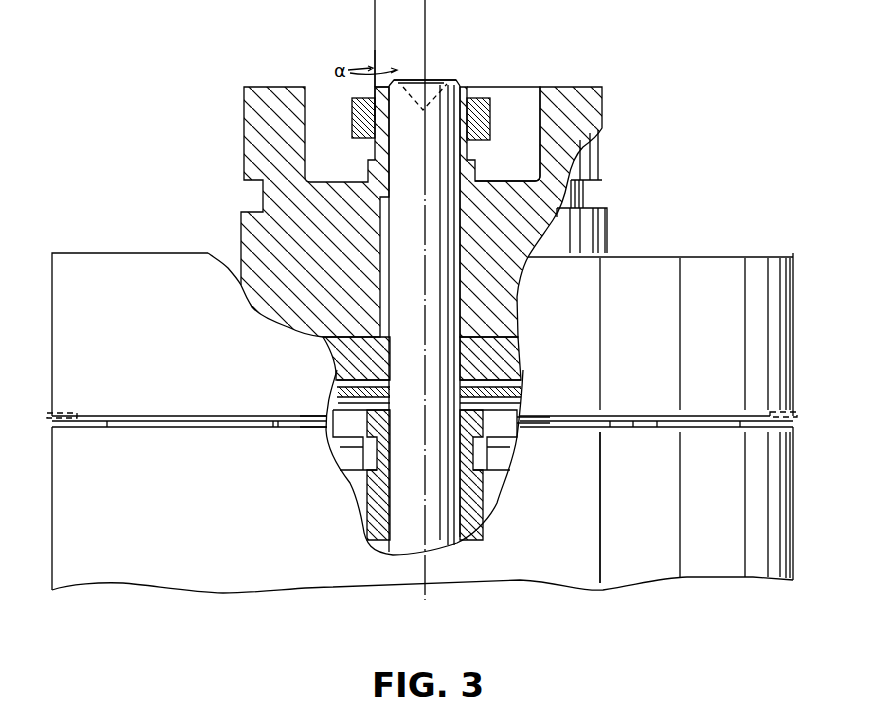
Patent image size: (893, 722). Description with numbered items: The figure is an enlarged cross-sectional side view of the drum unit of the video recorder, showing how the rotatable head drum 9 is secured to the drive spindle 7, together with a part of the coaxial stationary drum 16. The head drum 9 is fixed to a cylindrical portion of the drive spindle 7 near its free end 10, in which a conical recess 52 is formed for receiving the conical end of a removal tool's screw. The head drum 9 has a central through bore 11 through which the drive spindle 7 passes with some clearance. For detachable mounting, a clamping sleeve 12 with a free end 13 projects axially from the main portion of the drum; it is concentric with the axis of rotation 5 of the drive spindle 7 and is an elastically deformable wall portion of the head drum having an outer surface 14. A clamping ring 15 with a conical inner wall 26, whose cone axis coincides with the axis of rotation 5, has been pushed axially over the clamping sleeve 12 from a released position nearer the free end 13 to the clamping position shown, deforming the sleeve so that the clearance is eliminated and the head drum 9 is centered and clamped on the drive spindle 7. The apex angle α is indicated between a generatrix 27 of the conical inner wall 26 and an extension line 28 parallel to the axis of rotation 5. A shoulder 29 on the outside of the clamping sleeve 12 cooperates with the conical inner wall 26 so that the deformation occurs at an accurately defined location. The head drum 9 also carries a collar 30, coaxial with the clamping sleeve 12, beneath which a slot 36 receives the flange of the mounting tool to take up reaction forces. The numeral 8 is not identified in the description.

The axis of rotation 5 is at (428, 28).
The drive spindle 7 is at (433, 307).
The gasket 8 is at (67, 413).
The head drum 9 is at (753, 278).
The free end 10 is at (447, 80).
The central through bore 11 is at (462, 283).
The clamping sleeve 12 is at (463, 144).
The free end 13 is at (396, 72).
The outer surface 14 is at (373, 148).
The clamping ring 15 is at (483, 117).
The stationary drum 16 is at (718, 542).
The conical inner wall 26 is at (477, 100).
The generatrix 27 is at (375, 53).
The extension line 28 is at (378, 52).
The shoulder 29 is at (357, 117).
The collar 30 is at (587, 162).
The slot 36 is at (590, 193).
The conical recess 52 is at (421, 112).